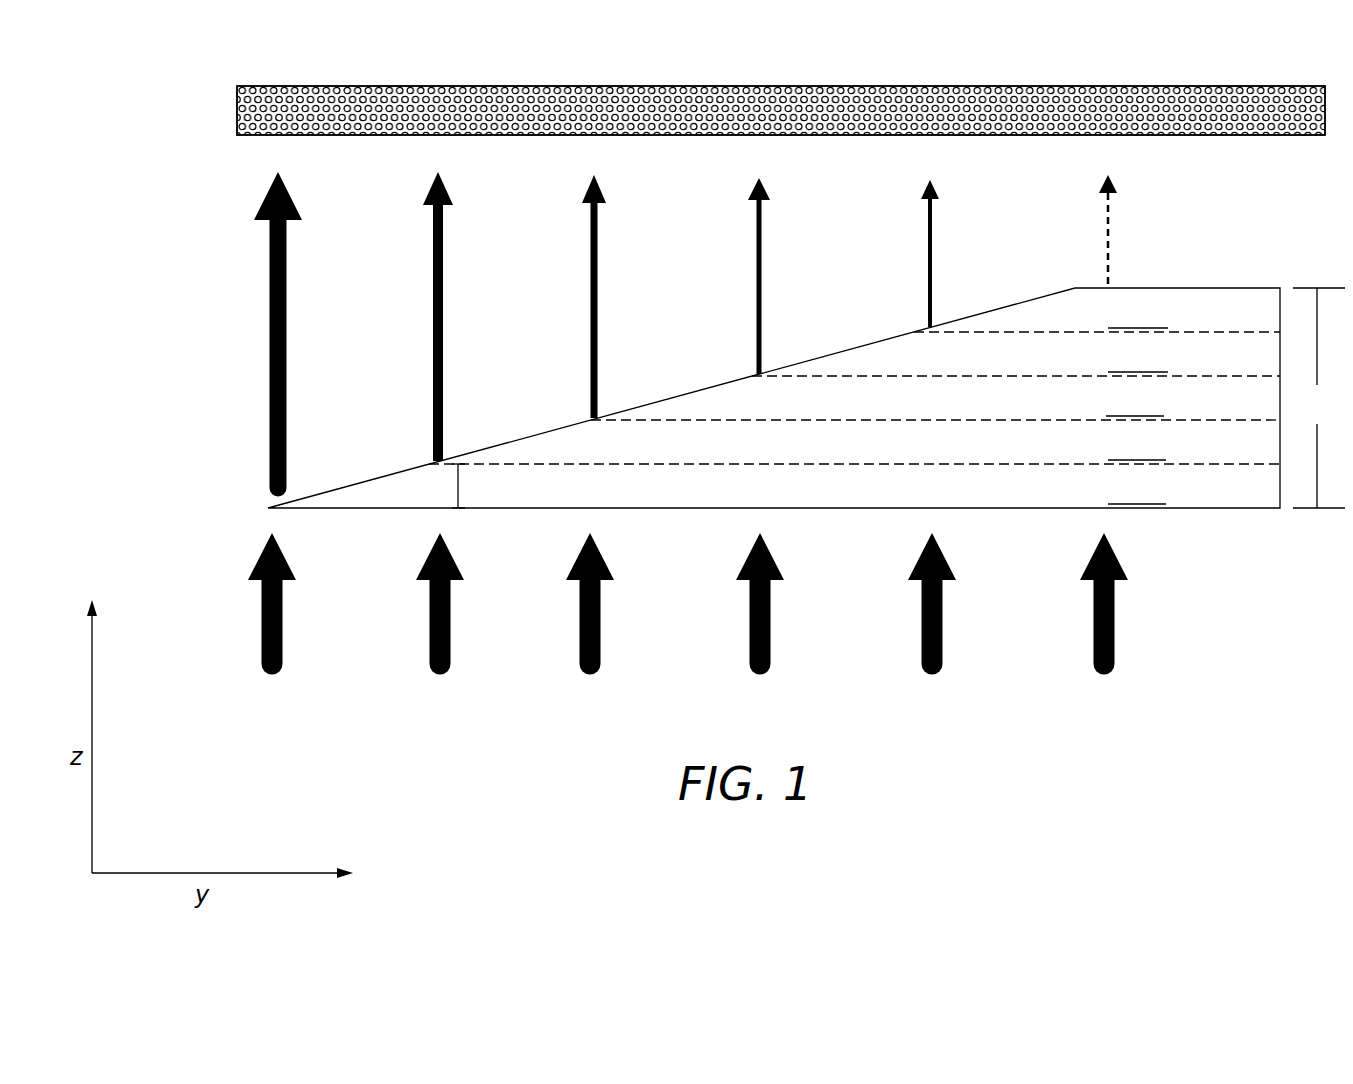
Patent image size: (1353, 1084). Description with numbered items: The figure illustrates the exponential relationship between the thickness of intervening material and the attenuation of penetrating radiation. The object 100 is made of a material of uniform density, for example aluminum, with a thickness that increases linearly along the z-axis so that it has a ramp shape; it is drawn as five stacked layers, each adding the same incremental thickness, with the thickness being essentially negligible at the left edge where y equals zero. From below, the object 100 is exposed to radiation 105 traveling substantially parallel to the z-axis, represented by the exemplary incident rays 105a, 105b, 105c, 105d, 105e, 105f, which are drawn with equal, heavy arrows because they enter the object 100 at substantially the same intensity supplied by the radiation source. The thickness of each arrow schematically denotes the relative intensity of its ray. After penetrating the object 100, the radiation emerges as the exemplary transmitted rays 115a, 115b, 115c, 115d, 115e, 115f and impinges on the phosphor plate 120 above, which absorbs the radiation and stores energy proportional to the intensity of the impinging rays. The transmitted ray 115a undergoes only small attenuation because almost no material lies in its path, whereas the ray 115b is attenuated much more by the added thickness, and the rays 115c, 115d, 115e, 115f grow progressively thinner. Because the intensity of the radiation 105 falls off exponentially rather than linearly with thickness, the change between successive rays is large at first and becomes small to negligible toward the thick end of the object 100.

The object 100 is at (1213, 287).
The radiation 105 is at (1091, 763).
The ray 105a is at (283, 620).
The ray 105b is at (451, 620).
The ray 105c is at (601, 620).
The ray 105d is at (771, 620).
The ray 105e is at (943, 620).
The ray 105f is at (1115, 620).
The ray 115a is at (288, 306).
The ray 115b is at (444, 284).
The ray 115c is at (599, 270).
The ray 115d is at (762, 267).
The ray 115e is at (933, 240).
The ray 115f is at (1110, 240).
The phosphor plate 120 is at (277, 86).